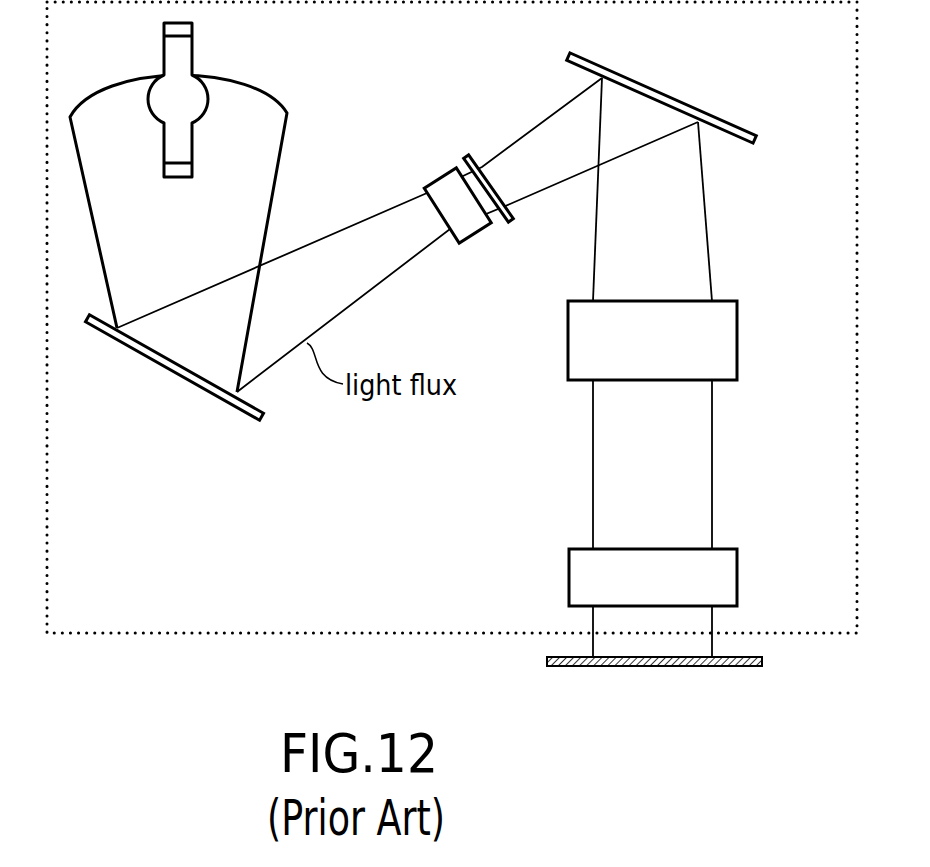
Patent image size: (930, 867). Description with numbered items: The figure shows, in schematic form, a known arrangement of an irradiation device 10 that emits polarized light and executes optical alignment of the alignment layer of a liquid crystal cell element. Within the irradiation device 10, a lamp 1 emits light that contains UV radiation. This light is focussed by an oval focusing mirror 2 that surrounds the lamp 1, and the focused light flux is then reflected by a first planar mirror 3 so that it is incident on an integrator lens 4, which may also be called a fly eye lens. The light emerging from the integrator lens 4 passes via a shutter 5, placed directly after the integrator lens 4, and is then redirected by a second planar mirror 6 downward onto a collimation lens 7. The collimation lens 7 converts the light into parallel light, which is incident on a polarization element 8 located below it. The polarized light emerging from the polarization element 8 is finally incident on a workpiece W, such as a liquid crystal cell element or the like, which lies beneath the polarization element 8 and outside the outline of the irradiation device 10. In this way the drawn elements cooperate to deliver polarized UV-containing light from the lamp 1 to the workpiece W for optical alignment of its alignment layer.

The lamp 1 is at (192, 50).
The oval focusing mirror 2 is at (285, 110).
The first planar mirror 3 is at (155, 363).
The integrator lens 4 is at (440, 177).
The shutter 5 is at (467, 152).
The second planar mirror 6 is at (685, 102).
The collimation lens 7 is at (737, 313).
The polarization element 8 is at (737, 562).
The irradiation device 10 is at (90, 635).
The workpiece W is at (750, 657).